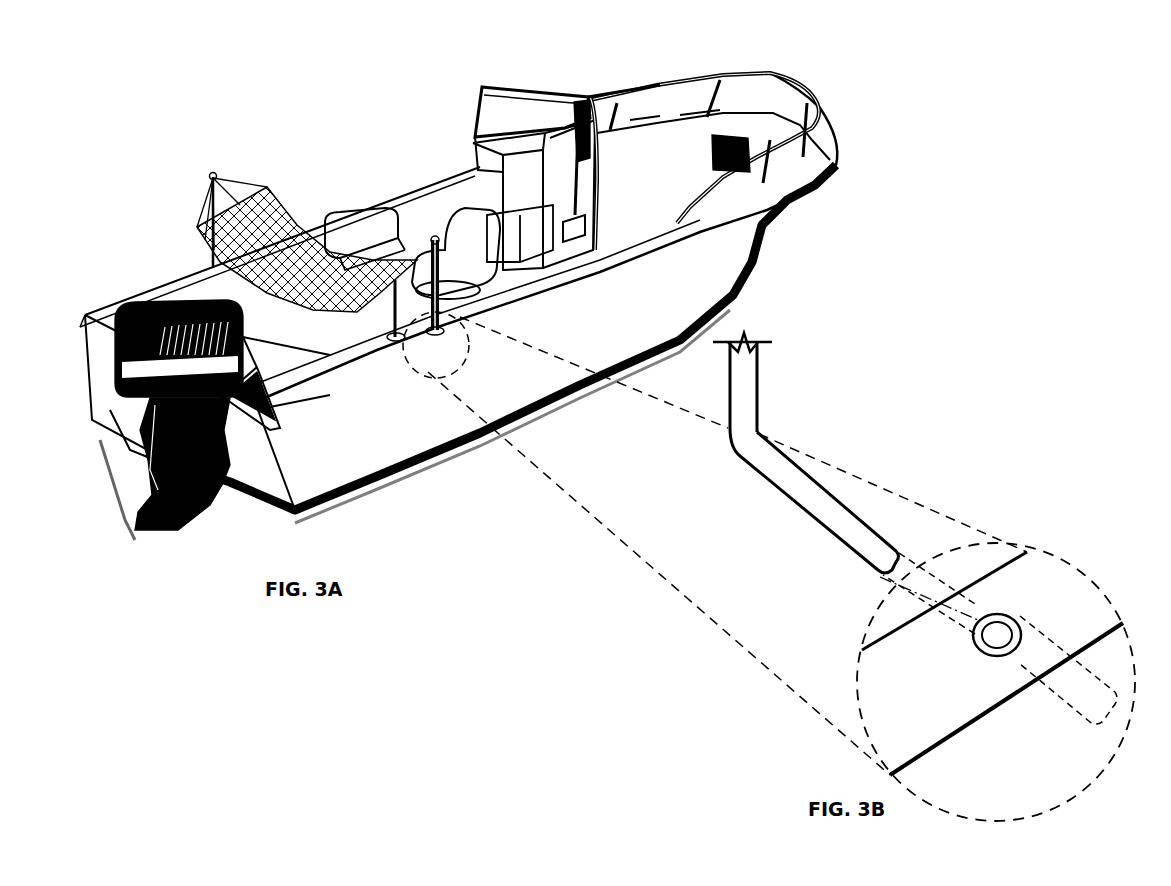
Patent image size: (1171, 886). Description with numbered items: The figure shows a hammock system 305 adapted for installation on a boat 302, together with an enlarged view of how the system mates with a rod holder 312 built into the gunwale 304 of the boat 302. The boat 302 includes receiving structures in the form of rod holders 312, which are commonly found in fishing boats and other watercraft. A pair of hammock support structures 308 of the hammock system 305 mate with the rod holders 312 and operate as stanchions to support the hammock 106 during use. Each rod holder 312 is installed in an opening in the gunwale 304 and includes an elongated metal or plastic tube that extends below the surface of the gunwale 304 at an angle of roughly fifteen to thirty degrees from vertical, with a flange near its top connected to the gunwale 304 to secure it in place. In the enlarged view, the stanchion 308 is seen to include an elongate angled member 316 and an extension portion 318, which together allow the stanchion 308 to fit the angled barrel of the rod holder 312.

In FIG. 3A, the boat 302 is at (458, 306).
In FIG. 3A, the hammock system 305 is at (283, 202).
In FIG. 3A, the hammock 106 is at (283, 205).
In FIG. 3A, the hammock support structure 308 is at (192, 185).
In FIG. 3B, the hammock support structure 308 is at (821, 446).
In FIG. 3B, the extension portion 318 is at (757, 383).
In FIG. 3B, the elongate angled member 316 is at (833, 536).
In FIG. 3B, the rod holder 312 is at (1013, 620).
In FIG. 3B, the gunwale 304 is at (929, 708).